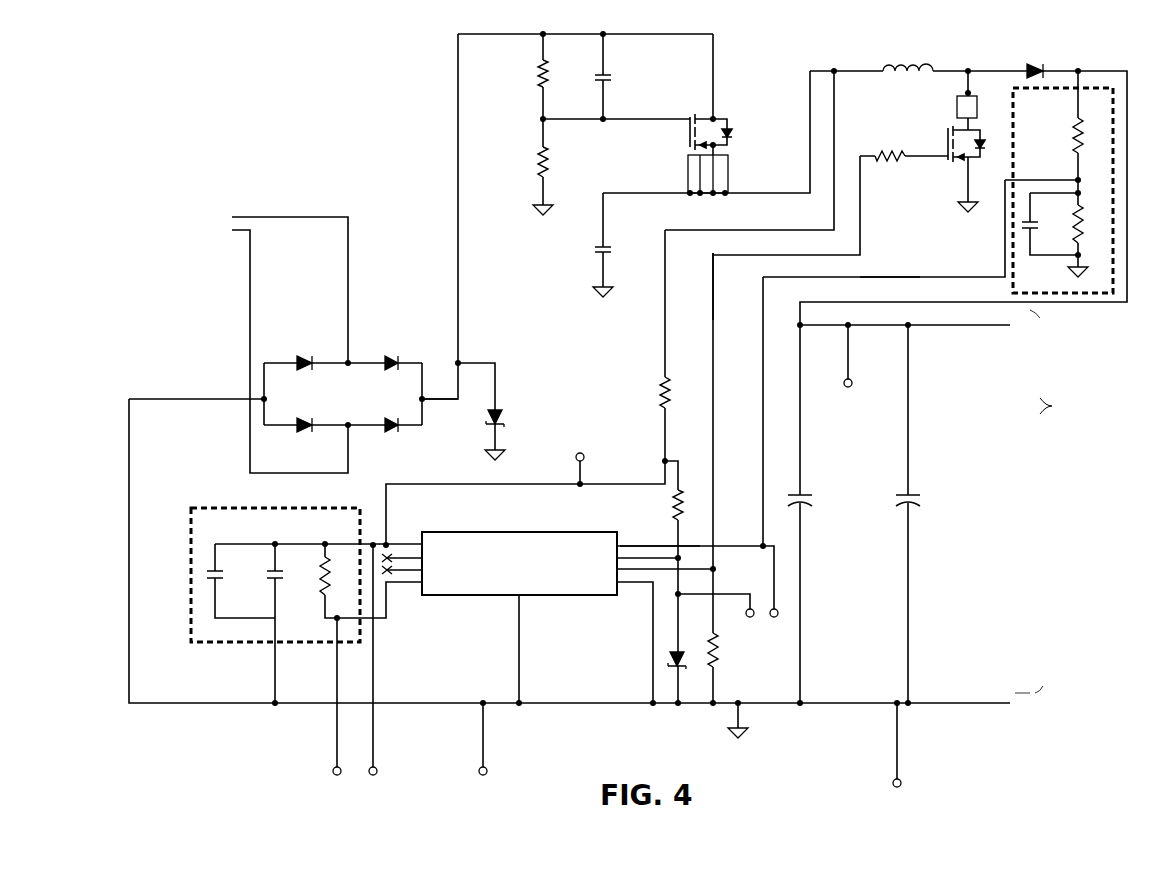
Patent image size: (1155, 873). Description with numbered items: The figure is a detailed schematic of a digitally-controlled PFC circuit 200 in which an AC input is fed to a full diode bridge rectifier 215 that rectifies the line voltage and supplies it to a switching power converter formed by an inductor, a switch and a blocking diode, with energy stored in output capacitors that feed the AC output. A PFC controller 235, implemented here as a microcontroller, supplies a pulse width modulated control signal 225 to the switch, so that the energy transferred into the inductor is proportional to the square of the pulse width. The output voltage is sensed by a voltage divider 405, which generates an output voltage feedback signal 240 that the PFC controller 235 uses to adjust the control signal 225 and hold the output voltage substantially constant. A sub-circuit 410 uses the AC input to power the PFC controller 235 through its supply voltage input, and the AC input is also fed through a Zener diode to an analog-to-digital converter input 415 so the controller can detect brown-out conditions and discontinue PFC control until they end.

The PFC circuit 200 is at (265, 105).
The diode bridge rectifier 215 is at (365, 332).
The control signal 225 is at (713, 305).
The PFC controller 235 is at (550, 595).
The output voltage feedback signal 240 is at (888, 277).
The voltage divider 405 is at (1063, 293).
The sub-circuit 410 is at (252, 643).
The analog-to-digital converter input 415 is at (645, 546).